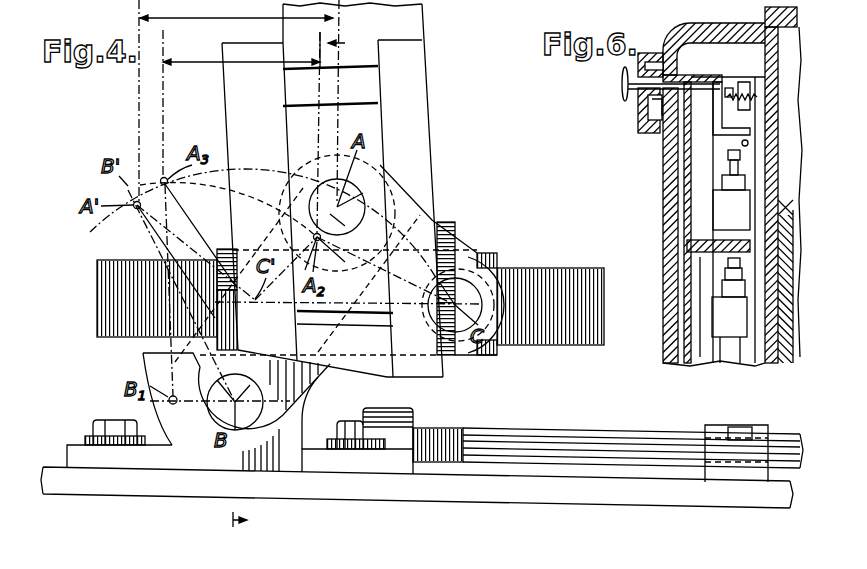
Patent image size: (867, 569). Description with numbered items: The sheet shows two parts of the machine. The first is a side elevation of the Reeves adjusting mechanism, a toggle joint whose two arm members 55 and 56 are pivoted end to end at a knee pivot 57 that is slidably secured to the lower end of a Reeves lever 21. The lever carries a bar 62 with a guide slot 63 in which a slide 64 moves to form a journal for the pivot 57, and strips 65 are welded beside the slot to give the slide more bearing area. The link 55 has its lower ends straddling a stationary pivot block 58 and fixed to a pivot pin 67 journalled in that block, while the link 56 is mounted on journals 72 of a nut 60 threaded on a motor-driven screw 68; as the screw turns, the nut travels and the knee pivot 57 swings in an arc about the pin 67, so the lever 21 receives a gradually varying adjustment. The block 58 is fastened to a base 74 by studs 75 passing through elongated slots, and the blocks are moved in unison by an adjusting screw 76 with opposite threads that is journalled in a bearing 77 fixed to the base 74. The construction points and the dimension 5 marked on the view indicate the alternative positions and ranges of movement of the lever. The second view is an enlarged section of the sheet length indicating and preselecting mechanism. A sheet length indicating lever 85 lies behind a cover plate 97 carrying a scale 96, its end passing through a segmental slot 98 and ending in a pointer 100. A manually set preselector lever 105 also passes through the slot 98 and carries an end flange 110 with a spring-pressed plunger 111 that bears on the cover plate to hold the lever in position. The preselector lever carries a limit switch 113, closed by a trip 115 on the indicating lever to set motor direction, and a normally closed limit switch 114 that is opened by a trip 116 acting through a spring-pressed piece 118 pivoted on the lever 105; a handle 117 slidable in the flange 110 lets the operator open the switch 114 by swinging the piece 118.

In FIG. 4, the Reeves lever 21 is at (436, 109).
In FIG. 4, the arm member 55 is at (293, 381).
In FIG. 4, the arm member 56 is at (446, 246).
In FIG. 4, the knee pivot 57 is at (387, 182).
In FIG. 4, the pivot block 58 is at (145, 356).
In FIG. 4, the nut 60 is at (488, 357).
In FIG. 4, the bar 62 is at (412, 22).
In FIG. 4, the guide slot 63 is at (365, 82).
In FIG. 4, the slide 64 is at (372, 126).
In FIG. 4, the strips 65 is at (232, 97).
In FIG. 4, the pivot pin 67 is at (247, 427).
In FIG. 4, the adjusting screw 68 is at (546, 270).
In FIG. 4, the journal 72 is at (463, 293).
In FIG. 4, the base 74 is at (527, 496).
In FIG. 4, the stud 75 is at (97, 424).
In FIG. 4, the adjusting screw 76 is at (576, 442).
In FIG. 4, the bearing 77 is at (730, 476).
In FIG. 4, the dimension 5 is at (251, 268).
In FIG. 6, the sheet length indicating lever 85 is at (690, 333).
In FIG. 6, the scale 96 is at (663, 138).
In FIG. 6, the cover plate 97 is at (664, 228).
In FIG. 6, the segmental slot 98 is at (680, 76).
In FIG. 6, the pointer 100 is at (650, 108).
In FIG. 6, the preselector lever 105 is at (753, 360).
In FIG. 6, the end flange 110 is at (648, 133).
In FIG. 6, the spring-pressed plunger 111 is at (660, 62).
In FIG. 6, the limit switch 113 is at (722, 336).
In FIG. 6, the limit switch 114 is at (726, 205).
In FIG. 6, the trip 115 is at (705, 252).
In FIG. 6, the trip 116 is at (713, 131).
In FIG. 6, the handle 117 is at (622, 86).
In FIG. 6, the spring-pressed piece 118 is at (740, 122).